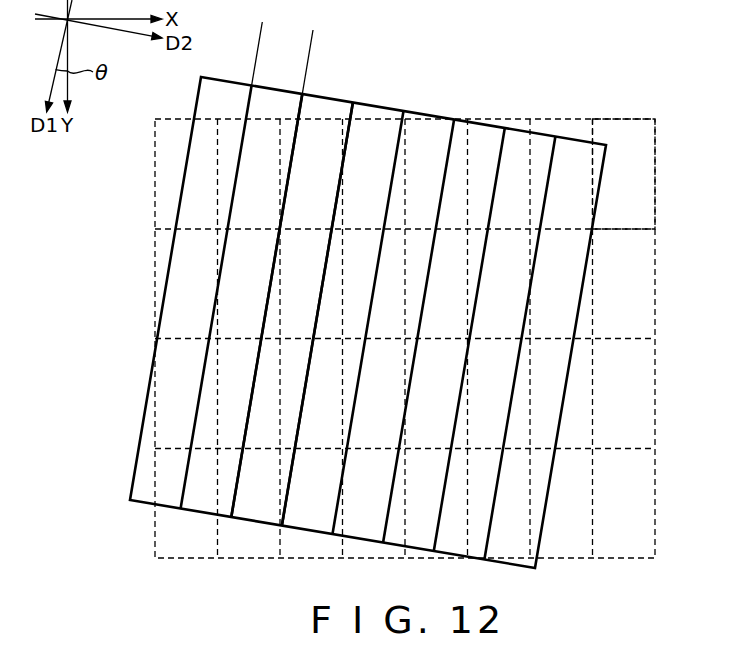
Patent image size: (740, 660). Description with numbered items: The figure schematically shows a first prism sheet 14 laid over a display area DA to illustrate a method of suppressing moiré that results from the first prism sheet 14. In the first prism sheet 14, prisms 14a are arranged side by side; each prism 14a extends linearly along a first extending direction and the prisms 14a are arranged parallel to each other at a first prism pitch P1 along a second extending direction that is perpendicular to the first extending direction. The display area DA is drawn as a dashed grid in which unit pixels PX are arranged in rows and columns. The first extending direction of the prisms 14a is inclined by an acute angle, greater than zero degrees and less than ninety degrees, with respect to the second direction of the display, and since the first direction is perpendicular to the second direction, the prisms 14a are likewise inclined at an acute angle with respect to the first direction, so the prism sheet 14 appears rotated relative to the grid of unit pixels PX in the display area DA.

The first prism sheet 14 is at (406, 98).
The prism 14a is at (323, 107).
The first prism pitch P1 is at (311, 37).
The display area DA is at (565, 108).
The unit pixel PX is at (627, 130).